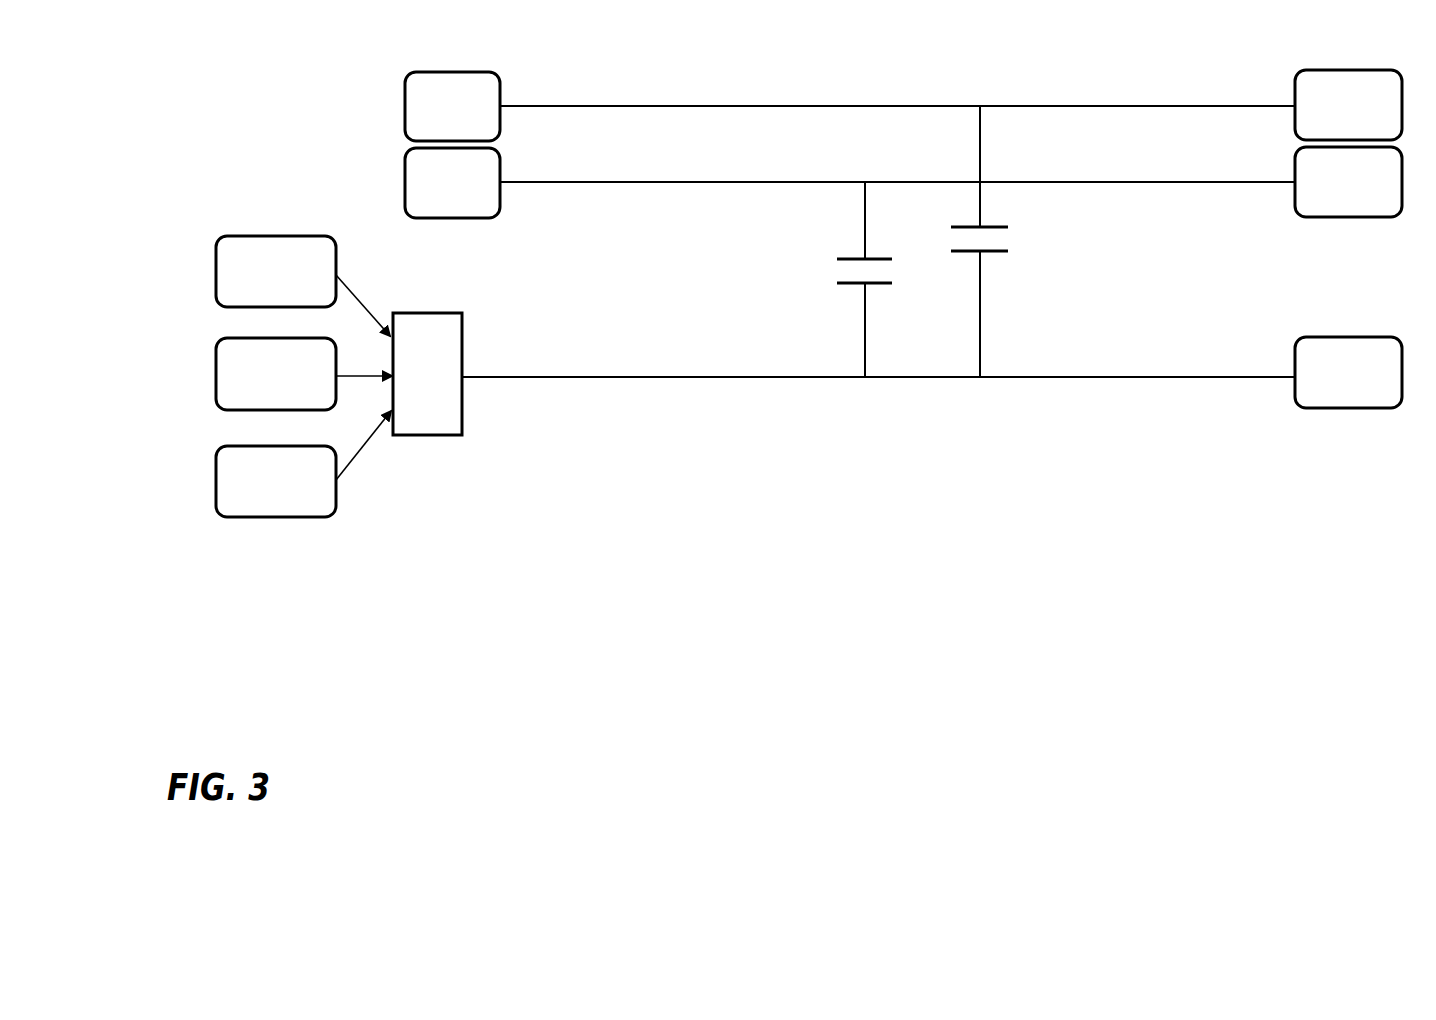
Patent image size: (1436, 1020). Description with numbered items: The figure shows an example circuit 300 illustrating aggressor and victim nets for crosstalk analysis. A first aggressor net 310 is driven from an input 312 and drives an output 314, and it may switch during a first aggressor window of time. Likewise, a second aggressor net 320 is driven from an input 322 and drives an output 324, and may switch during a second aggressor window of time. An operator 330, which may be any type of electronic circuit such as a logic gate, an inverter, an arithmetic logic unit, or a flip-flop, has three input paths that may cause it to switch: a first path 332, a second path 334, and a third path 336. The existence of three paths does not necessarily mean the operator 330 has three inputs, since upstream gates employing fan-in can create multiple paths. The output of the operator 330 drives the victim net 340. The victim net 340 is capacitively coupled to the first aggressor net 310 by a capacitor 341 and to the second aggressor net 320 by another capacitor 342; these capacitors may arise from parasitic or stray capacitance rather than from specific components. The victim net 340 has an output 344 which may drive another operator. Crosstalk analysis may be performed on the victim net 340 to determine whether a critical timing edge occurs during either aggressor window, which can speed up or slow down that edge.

The circuit 300 is at (308, 613).
The first aggressor net 310 is at (559, 105).
The input 312 is at (471, 134).
The output 314 is at (1367, 132).
The second aggressor net 320 is at (682, 183).
The input 322 is at (471, 210).
The output 324 is at (1367, 208).
The operator 330 is at (427, 374).
The first path 332 is at (293, 298).
The second path 334 is at (293, 400).
The third path 336 is at (293, 508).
The victim net 340 is at (1072, 377).
The capacitor 341 is at (1010, 236).
The capacitor 342 is at (835, 267).
The output 344 is at (1367, 398).